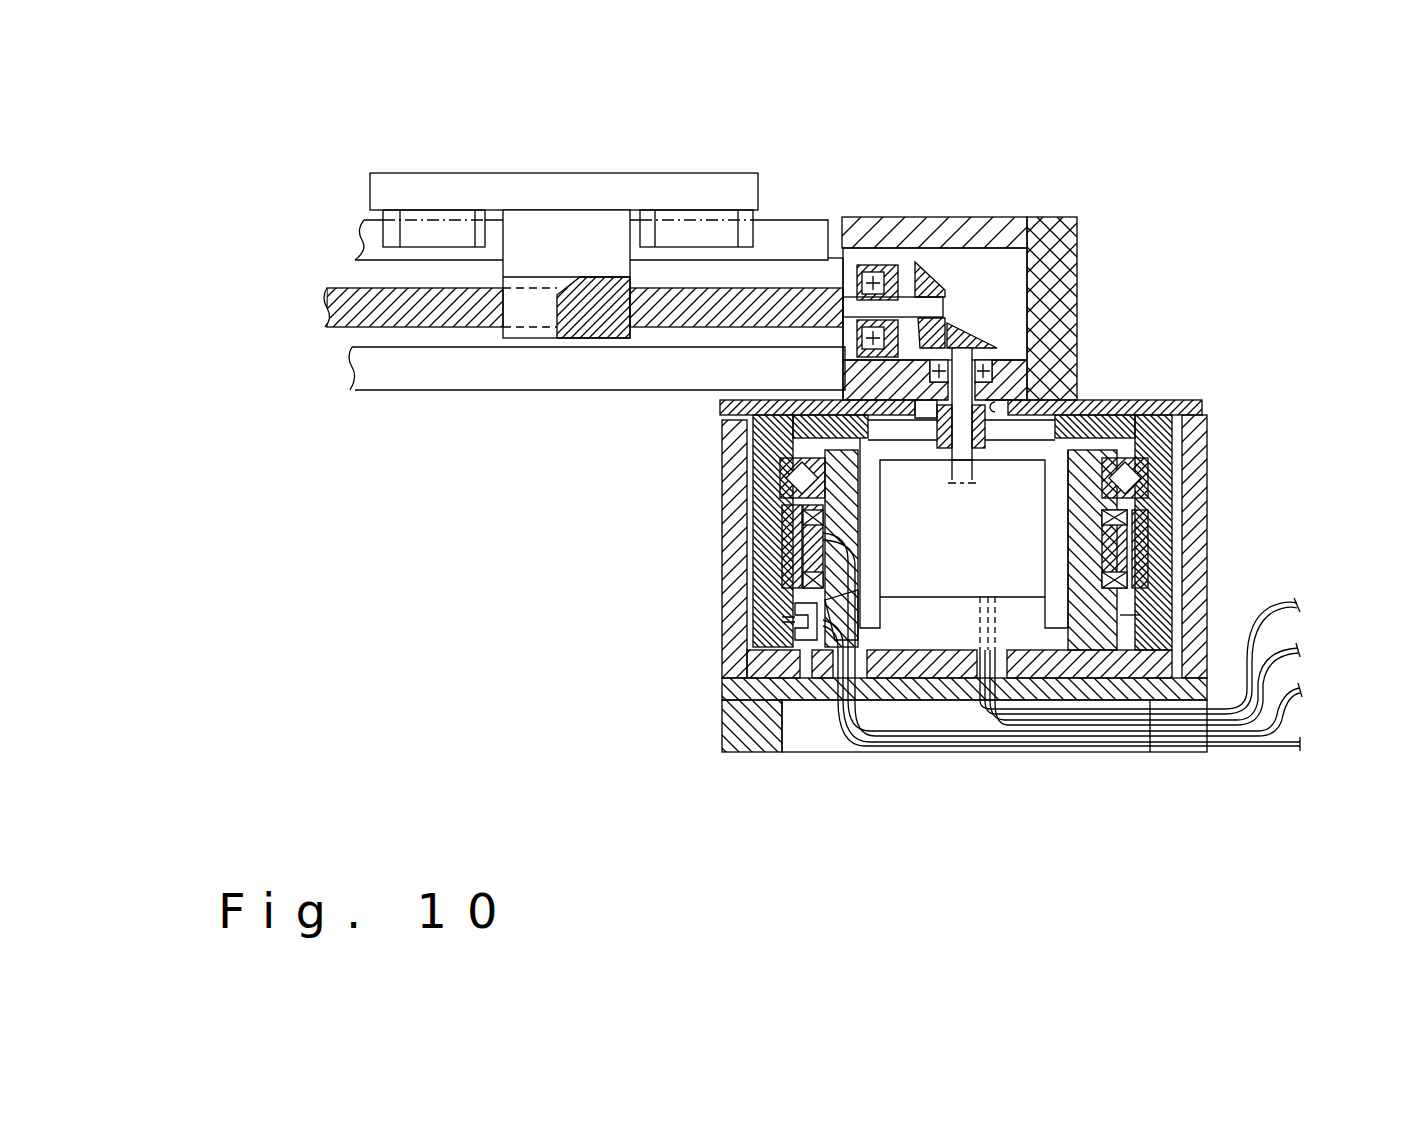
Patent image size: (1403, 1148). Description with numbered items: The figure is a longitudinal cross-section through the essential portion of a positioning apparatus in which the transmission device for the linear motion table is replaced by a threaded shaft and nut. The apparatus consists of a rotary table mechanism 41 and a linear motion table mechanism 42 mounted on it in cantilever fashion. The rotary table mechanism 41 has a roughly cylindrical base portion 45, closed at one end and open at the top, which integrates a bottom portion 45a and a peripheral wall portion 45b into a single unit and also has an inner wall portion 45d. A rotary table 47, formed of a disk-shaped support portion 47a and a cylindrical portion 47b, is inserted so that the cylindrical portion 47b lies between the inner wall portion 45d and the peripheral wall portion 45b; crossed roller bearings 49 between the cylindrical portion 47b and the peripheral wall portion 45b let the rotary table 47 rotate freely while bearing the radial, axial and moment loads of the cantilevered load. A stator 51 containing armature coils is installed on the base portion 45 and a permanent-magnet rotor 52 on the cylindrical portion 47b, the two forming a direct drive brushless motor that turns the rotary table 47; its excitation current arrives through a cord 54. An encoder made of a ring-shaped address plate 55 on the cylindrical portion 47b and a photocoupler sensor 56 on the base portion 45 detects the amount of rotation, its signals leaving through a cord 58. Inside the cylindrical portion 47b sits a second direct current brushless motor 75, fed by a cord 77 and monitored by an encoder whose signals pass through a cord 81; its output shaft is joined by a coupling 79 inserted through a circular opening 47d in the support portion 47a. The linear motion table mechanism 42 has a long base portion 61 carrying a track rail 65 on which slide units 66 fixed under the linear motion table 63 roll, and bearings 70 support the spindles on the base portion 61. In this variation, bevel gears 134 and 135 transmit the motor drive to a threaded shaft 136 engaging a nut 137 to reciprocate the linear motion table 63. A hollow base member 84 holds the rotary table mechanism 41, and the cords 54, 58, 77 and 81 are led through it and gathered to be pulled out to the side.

The rotary table mechanism 41 is at (972, 599).
The linear motion table mechanism 42 is at (597, 291).
The base portion 45 is at (963, 638).
The bottom portion 45a is at (905, 662).
The peripheral wall portion 45b is at (1197, 528).
The inner wall portion 45d is at (1085, 592).
The rotary table 47 is at (742, 437).
The support portion 47a is at (1202, 405).
The cylindrical portion 47b is at (1157, 498).
The circular opening 47d is at (1000, 385).
The crossed roller bearings 49 is at (783, 487).
The stator 51 is at (797, 605).
The rotor 52 is at (787, 553).
The cord 54 is at (1302, 690).
The address plate 55 is at (800, 642).
The sensor 56 is at (838, 642).
The cord 58 is at (1302, 744).
The base portion 61 is at (382, 395).
The linear motion table 63 is at (560, 190).
The track rail 65 is at (812, 237).
The slide units 66 is at (440, 228).
The bearings 70 is at (990, 372).
The direct current brushless motor 75 is at (958, 578).
The cord 77 is at (1300, 605).
The coupling 79 is at (990, 433).
The cord 81 is at (1300, 650).
The base member 84 is at (755, 740).
The bevel gear 134 is at (993, 333).
The bevel gear 135 is at (930, 265).
The threaded shaft 136 is at (490, 327).
The nut 137 is at (640, 282).